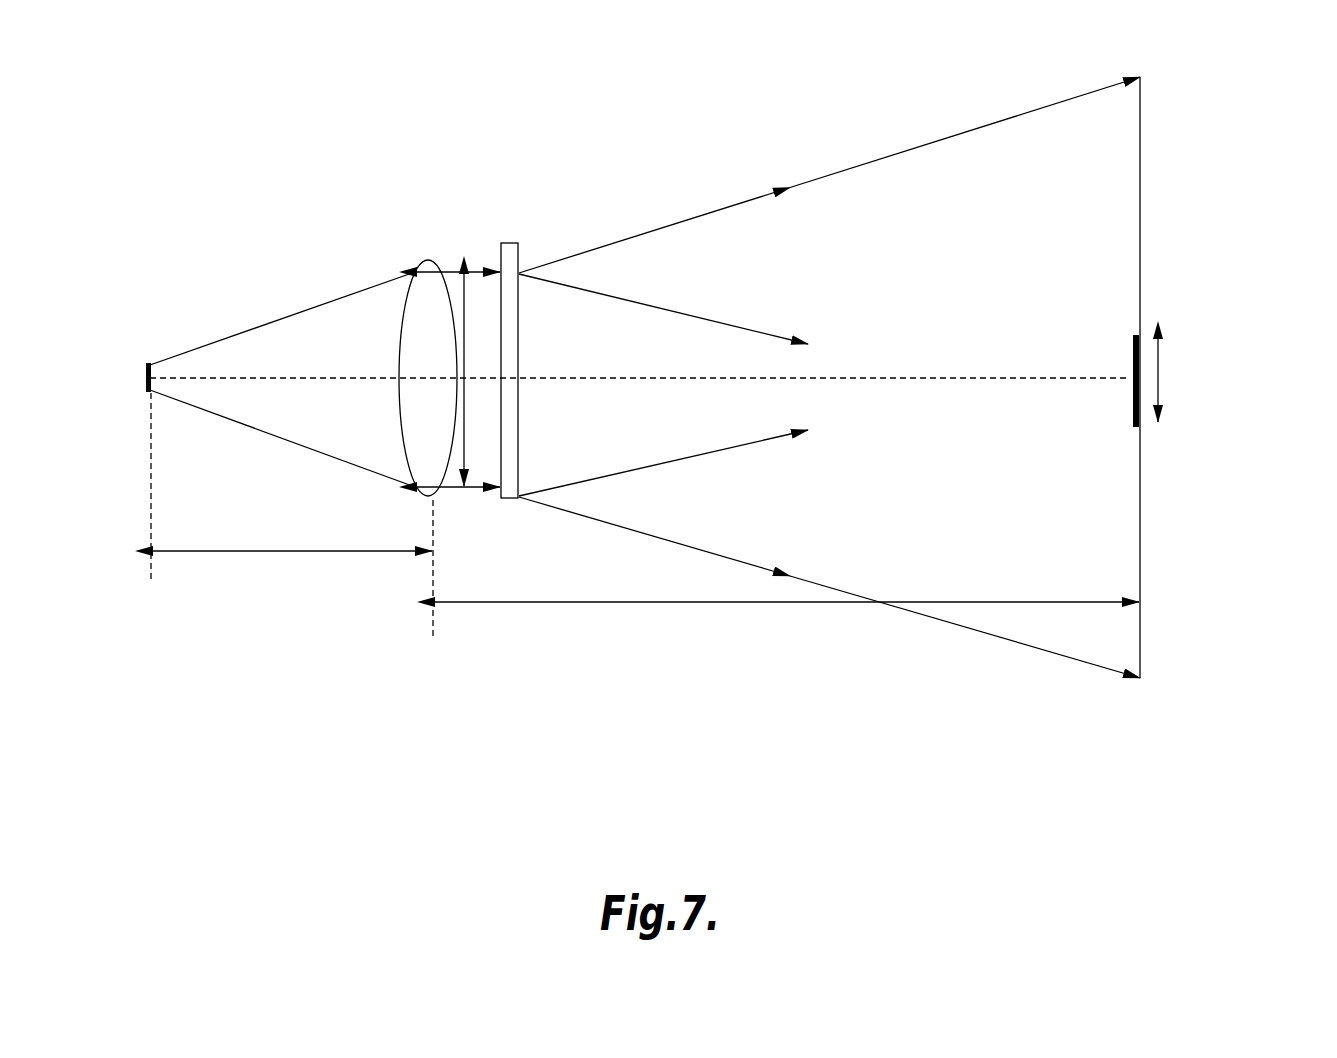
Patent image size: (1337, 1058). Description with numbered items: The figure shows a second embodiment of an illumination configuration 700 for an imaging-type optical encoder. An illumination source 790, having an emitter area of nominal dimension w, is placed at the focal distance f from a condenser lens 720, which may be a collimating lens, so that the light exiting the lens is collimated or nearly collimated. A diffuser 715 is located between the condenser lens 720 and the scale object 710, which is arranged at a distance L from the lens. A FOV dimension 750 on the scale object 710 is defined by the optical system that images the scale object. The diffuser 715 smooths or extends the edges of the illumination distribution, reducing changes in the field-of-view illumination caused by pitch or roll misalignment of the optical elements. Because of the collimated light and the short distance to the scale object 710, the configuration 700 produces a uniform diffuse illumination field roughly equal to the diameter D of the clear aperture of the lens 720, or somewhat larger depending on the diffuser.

The illumination configuration 700 is at (1218, 106).
The illumination source 790 is at (146, 371).
The condenser lens 720 is at (432, 259).
The diffuser 715 is at (511, 243).
The scale object 710 is at (1138, 334).
The FOV dimension 750 is at (1158, 380).
The diameter of the clear aperture D is at (464, 322).
The focal distance f is at (303, 551).